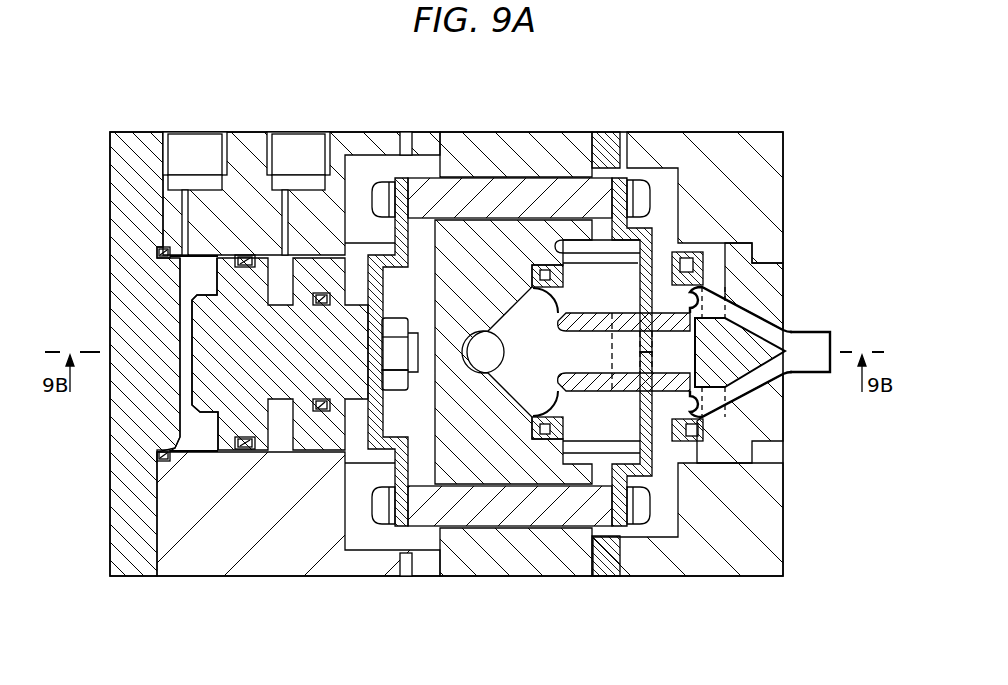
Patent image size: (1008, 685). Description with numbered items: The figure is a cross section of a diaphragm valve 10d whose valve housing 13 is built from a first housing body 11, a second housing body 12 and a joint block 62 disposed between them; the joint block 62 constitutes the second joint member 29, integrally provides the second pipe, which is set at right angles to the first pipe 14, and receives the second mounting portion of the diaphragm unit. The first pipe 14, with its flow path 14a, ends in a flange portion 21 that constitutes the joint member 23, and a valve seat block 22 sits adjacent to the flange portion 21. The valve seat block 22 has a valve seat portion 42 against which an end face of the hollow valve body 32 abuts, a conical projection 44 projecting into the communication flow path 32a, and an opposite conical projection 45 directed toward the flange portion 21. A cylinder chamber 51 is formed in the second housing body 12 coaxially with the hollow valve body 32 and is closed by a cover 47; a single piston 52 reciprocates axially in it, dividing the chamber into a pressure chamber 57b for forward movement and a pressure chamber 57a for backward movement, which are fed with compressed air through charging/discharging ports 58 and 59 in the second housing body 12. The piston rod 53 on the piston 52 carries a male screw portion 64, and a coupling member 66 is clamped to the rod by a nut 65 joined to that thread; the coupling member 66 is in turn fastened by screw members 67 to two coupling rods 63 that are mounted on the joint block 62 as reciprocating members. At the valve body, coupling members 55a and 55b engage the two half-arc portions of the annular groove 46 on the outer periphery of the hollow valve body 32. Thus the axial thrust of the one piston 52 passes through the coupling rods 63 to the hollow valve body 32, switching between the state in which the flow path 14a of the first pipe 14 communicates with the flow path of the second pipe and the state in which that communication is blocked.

The diaphragm valve 10d is at (772, 116).
The first housing body 11 is at (755, 550).
The second housing body 12 is at (195, 478).
The valve housing 13 is at (750, 180).
The first pipe 14 is at (835, 325).
The flow path 14a is at (806, 340).
The flange portion 21 is at (775, 452).
The valve seat block 22 is at (703, 258).
The joint member 23 is at (735, 281).
The second joint member 29 is at (493, 228).
The hollow valve body 32 is at (578, 385).
The communication flow path 32a is at (600, 343).
The valve seat portion 42 is at (778, 398).
The conical projection 44 is at (655, 352).
The conical projection 45 is at (792, 355).
The annular groove 46 is at (632, 300).
The cover 47 is at (120, 525).
The cylinder chamber 51 is at (195, 273).
The piston 52 is at (235, 360).
The piston rod 53 is at (320, 322).
The coupling member 55a is at (648, 236).
The coupling member 55b is at (732, 480).
The pressure chamber for backward movement 57a is at (195, 432).
The pressure chamber for forward movement 57b is at (192, 455).
The charging/discharging port 58 is at (290, 138).
The charging/discharging port 59 is at (186, 138).
The joint block 62 is at (457, 150).
The coupling rod 63 is at (566, 195).
The male screw portion 64 is at (420, 338).
The nut 65 is at (395, 384).
The coupling member 66 is at (356, 268).
The screw member 67 is at (381, 188).